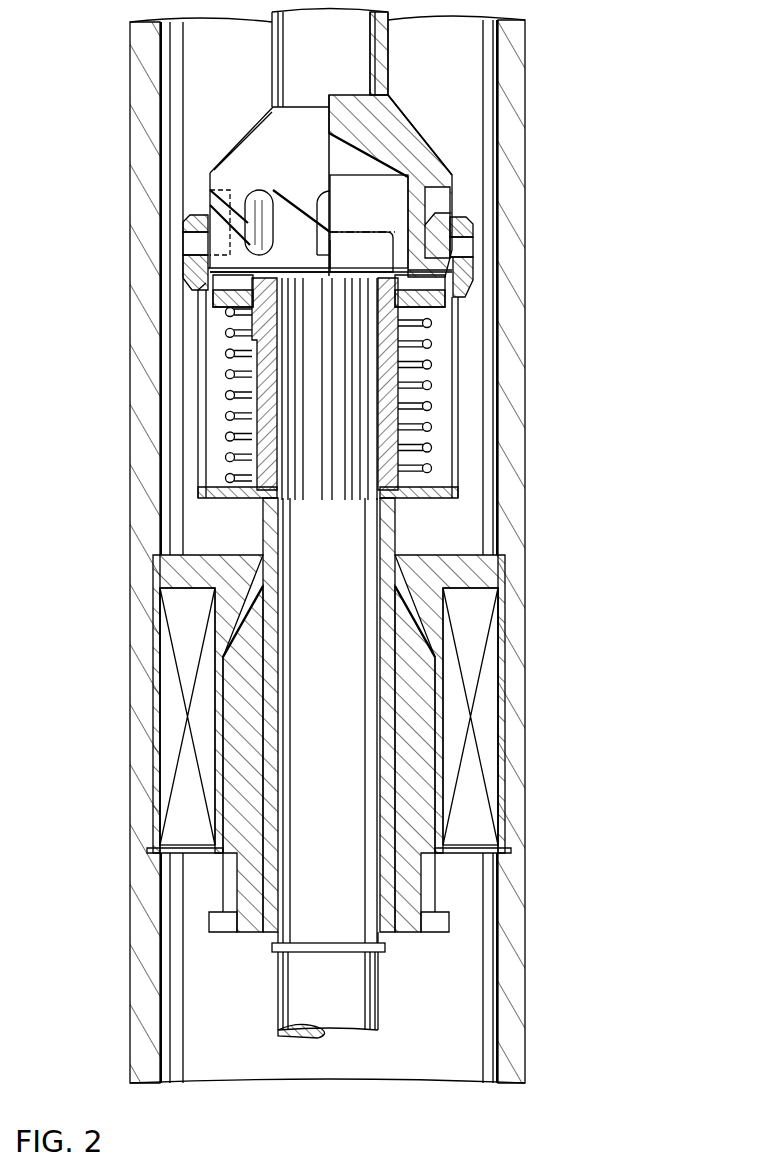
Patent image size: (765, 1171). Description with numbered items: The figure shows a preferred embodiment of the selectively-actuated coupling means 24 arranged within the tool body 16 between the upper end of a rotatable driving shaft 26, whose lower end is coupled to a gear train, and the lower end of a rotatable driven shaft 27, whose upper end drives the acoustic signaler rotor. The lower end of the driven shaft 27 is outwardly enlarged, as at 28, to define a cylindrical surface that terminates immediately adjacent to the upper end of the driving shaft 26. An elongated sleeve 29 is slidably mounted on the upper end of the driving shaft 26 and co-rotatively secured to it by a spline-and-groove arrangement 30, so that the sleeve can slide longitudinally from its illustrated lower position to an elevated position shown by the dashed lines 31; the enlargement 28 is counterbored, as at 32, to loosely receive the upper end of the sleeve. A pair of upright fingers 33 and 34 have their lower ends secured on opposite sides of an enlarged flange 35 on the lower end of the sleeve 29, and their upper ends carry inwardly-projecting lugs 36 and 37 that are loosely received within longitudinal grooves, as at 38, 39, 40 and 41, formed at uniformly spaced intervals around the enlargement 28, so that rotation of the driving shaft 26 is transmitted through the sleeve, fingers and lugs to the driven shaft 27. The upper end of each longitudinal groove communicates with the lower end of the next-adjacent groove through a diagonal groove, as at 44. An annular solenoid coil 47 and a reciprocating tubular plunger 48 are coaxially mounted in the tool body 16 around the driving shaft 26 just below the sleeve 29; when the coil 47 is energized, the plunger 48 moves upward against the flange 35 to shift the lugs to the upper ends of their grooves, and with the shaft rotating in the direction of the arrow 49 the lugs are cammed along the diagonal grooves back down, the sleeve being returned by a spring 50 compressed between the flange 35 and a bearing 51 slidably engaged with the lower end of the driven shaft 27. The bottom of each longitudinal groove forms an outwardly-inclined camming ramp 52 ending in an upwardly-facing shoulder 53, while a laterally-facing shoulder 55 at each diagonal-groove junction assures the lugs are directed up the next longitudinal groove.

The tool body 16 is at (512, 553).
The selectively-actuated coupling means 24 is at (474, 289).
The driving shaft 26 is at (353, 995).
The driven shaft 27 is at (375, 57).
The cylindrical enlargement 28 is at (210, 175).
The sleeve 29 is at (390, 442).
The spline-and-groove arrangement 30 is at (370, 490).
The dashed lines 31 is at (405, 200).
The counterbore 32 is at (410, 178).
The upright finger 33 is at (455, 393).
The upright finger 34 is at (198, 405).
The flange 35 is at (436, 499).
The lug 36 is at (466, 247).
The lug 37 is at (195, 247).
The longitudinal groove 38 is at (187, 265).
The longitudinal groove 39 is at (268, 242).
The longitudinal groove 40 is at (322, 188).
The longitudinal groove 41 is at (445, 226).
The diagonal groove 44 is at (207, 203).
The solenoid coil 47 is at (483, 712).
The tubular plunger 48 is at (388, 642).
The arrow 49 is at (312, 963).
The spring 50 is at (432, 343).
The bearing 51 is at (225, 289).
The camming ramp 52 is at (186, 222).
The shoulder 53 is at (248, 192).
The lateral shoulder 55 is at (332, 231).